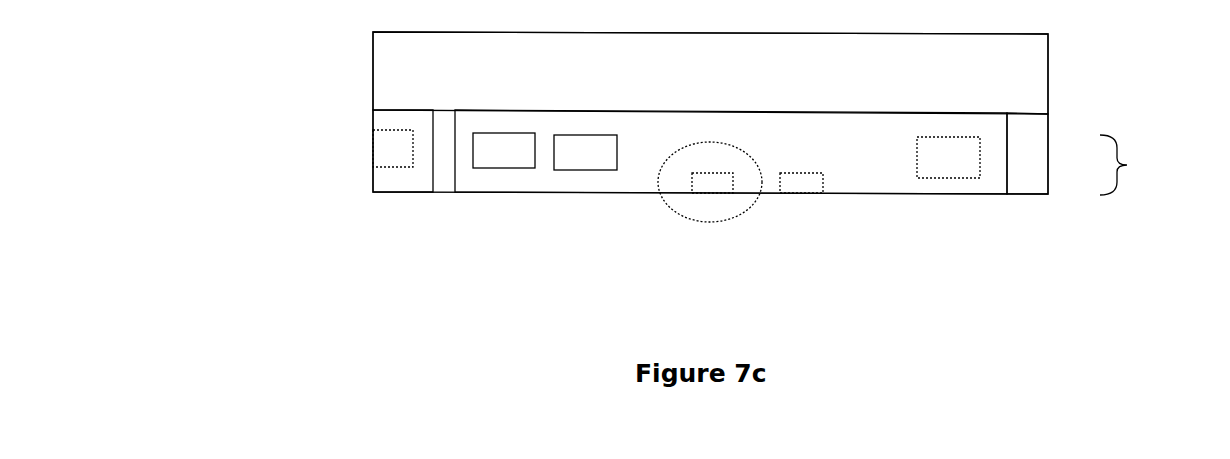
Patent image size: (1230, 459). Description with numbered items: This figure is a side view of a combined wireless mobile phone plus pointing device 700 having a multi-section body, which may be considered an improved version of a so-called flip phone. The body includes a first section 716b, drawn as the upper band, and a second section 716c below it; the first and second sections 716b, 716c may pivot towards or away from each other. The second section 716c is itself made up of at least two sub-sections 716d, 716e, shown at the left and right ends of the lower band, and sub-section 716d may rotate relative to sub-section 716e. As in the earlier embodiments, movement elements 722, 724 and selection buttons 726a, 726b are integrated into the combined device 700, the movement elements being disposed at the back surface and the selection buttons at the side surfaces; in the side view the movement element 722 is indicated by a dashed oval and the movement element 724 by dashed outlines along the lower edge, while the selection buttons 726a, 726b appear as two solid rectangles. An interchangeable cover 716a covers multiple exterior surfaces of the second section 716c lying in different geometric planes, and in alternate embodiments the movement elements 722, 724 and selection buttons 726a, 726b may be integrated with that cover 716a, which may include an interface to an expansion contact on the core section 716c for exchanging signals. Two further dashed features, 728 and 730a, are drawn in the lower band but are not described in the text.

The combined device 700 is at (238, 87).
The interchangeable cover 716a is at (985, 187).
The first section 716b is at (443, 69).
The second section 716c is at (1127, 165).
The sub-section 716d is at (413, 170).
The sub-section 716e is at (1027, 167).
The movement element 722 is at (670, 208).
The movement element 724 is at (718, 190).
The selection button 726a is at (513, 148).
The selection button 726b is at (597, 148).
The port 728 is at (382, 150).
The module 730a is at (960, 163).